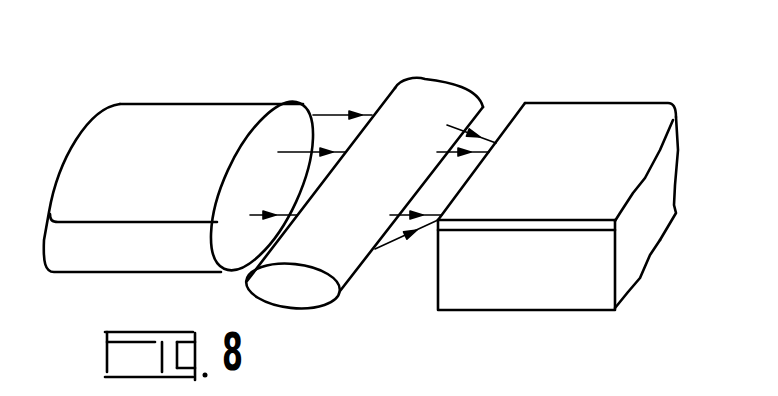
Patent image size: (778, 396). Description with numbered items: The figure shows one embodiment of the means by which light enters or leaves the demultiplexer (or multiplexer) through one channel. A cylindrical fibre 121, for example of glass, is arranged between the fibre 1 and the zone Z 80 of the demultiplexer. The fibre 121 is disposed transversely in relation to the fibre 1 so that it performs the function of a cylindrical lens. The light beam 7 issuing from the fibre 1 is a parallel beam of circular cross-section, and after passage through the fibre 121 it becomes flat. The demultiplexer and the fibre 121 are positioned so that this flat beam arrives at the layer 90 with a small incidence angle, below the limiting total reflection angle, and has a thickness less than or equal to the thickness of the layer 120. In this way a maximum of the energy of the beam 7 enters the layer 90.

The fibre 1 is at (73, 263).
The light beam 7 is at (333, 122).
The zone Z80 80 is at (527, 130).
The layer 90 is at (590, 110).
The layer 120 is at (463, 300).
The cylindrical fibre 121 is at (310, 307).